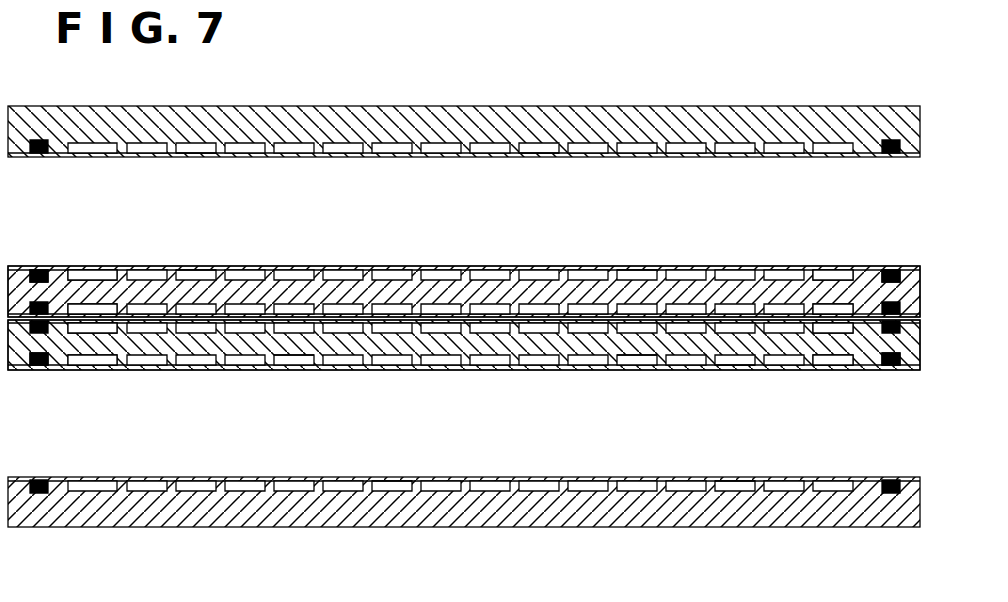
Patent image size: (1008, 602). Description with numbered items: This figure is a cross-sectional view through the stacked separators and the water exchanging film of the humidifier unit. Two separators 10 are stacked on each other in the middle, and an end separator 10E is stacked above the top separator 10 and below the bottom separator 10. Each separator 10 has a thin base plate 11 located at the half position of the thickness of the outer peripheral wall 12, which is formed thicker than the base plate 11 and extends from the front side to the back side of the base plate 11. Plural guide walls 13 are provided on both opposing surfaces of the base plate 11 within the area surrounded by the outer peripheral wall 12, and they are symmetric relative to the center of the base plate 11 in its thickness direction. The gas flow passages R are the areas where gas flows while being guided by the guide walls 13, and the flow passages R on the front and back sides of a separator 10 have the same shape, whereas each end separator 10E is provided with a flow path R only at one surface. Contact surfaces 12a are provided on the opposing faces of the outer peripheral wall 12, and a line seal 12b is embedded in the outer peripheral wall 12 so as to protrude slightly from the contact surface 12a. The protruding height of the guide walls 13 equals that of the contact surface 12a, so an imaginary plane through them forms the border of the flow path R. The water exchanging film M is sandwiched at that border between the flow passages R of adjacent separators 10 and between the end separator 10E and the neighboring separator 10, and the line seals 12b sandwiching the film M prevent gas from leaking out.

The end separator 10E is at (476, 103).
The separator 10 is at (415, 264).
The base plate 11 is at (745, 290).
The outer peripheral wall 12 is at (465, 333).
The contact surface 12a is at (62, 266).
The line seal 12b is at (40, 153).
The guide wall 13 is at (393, 160).
The water exchanging film M is at (197, 266).
The flow passage R is at (538, 152).